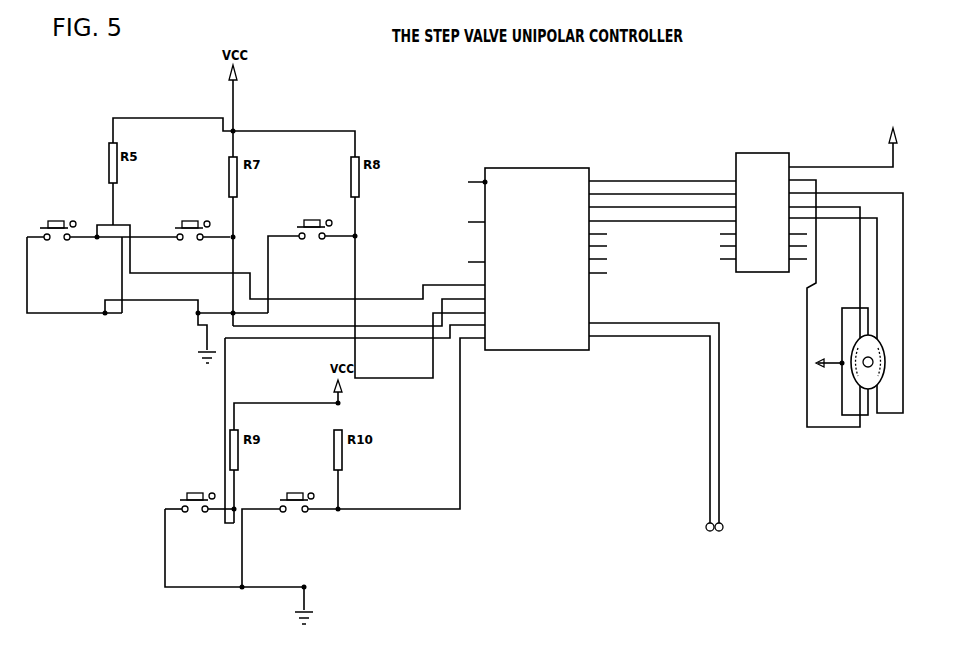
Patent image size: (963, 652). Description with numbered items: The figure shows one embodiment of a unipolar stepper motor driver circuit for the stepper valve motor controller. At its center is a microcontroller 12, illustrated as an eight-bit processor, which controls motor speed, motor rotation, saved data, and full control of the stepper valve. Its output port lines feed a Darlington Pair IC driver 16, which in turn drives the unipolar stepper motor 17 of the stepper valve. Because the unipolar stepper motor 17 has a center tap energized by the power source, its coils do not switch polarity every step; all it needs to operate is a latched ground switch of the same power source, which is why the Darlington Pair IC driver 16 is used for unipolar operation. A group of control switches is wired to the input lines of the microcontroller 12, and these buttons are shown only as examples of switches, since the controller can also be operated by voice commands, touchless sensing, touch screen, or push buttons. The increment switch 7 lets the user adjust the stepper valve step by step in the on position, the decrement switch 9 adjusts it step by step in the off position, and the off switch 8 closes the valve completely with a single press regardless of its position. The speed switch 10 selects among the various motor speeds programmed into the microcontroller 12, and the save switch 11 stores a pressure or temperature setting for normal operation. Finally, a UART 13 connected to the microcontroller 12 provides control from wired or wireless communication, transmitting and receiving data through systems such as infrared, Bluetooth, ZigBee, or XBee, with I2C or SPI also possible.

The increment switch 7 is at (55, 210).
The off switch 8 is at (190, 210).
The decrement switch 9 is at (305, 213).
The speed switch 10 is at (190, 487).
The save switch 11 is at (298, 487).
The microcontroller 12 is at (560, 166).
The UART 13 is at (712, 435).
The Darlington Pair IC driver 16 is at (723, 262).
The unipolar stepper motor 17 is at (880, 333).